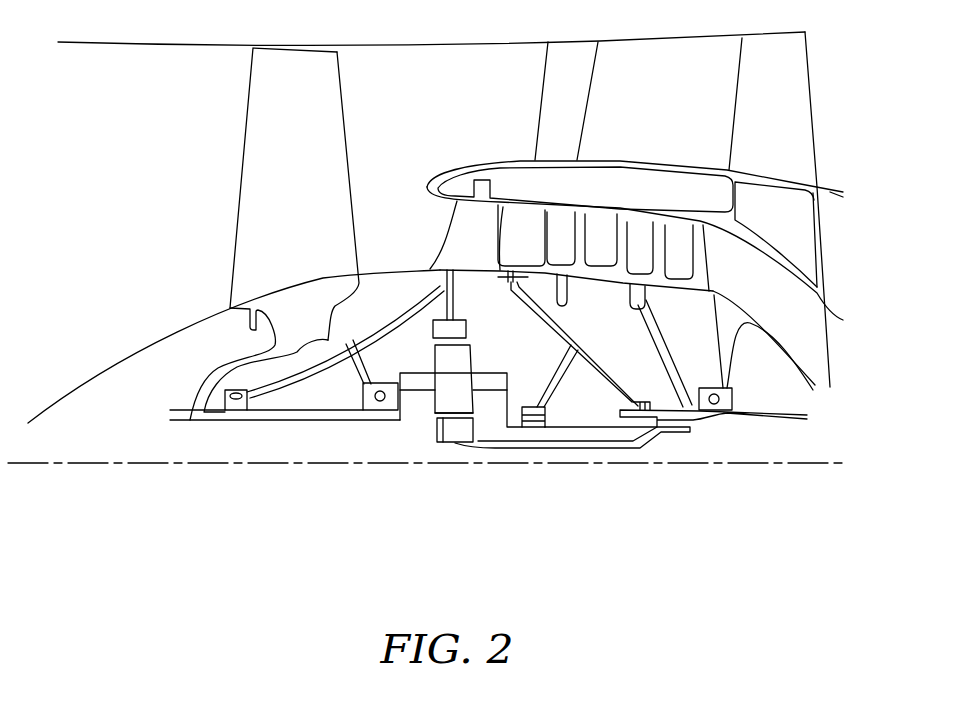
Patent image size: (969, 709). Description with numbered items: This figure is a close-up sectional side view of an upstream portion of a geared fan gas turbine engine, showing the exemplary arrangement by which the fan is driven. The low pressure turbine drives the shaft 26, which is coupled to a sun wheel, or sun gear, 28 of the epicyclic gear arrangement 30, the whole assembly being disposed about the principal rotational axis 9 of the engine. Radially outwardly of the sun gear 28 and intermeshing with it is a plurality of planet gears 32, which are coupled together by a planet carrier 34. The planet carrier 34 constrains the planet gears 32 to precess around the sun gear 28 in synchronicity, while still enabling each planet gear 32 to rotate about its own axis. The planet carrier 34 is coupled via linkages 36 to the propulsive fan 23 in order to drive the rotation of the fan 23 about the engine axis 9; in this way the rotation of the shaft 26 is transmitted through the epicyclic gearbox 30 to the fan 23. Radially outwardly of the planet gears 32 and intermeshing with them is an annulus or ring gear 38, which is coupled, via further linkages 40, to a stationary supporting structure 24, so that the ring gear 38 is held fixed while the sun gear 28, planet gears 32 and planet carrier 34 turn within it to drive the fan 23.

The principal rotational axis 9 is at (120, 463).
The propulsive fan 23 is at (252, 157).
The stationary supporting structure 24 is at (455, 236).
The shaft 26 is at (583, 443).
The sun gear 28 is at (456, 430).
The epicyclic gearbox 30 is at (445, 400).
The planet gears 32 is at (433, 412).
The planet carrier 34 is at (502, 398).
The linkages 36 is at (410, 405).
The ring gear 38 is at (452, 327).
The linkages 40 is at (440, 284).